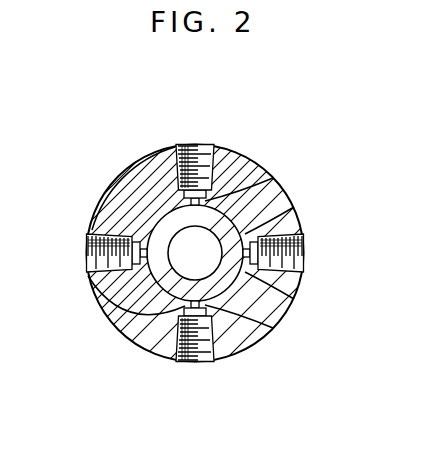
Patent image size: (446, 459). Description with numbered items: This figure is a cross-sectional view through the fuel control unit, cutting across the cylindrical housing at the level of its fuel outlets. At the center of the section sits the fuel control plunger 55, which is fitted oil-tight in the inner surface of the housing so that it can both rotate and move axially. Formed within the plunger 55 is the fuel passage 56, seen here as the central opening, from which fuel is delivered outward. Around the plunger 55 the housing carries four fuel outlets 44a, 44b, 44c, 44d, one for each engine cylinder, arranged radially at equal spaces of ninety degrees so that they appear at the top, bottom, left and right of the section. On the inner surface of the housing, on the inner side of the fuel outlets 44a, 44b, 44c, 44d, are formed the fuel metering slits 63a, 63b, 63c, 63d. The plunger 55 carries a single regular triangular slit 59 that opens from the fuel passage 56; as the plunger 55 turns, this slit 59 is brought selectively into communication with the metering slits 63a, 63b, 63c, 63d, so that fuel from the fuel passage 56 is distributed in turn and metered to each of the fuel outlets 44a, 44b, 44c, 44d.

The fuel outlet 44a is at (204, 364).
The fuel outlet 44b is at (294, 268).
The fuel outlet 44c is at (197, 143).
The fuel outlet 44d is at (88, 262).
The fuel control plunger 55 is at (165, 230).
The fuel passage 56 is at (210, 266).
The regular triangular slit 59 is at (285, 295).
The fuel metering slit 63a is at (262, 322).
The fuel metering slit 63b is at (258, 229).
The fuel metering slit 63c is at (218, 198).
The fuel metering slit 63d is at (125, 304).